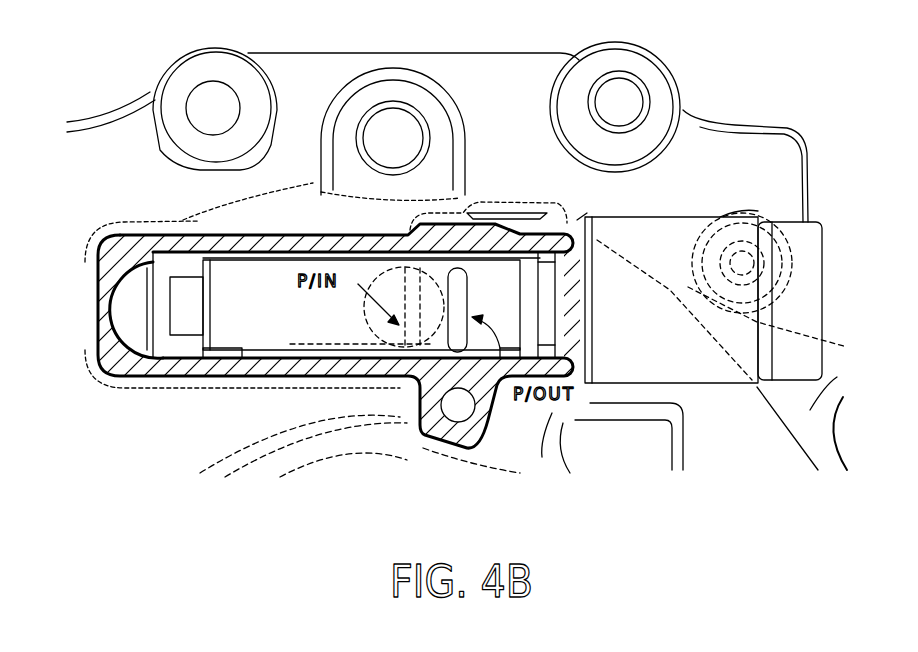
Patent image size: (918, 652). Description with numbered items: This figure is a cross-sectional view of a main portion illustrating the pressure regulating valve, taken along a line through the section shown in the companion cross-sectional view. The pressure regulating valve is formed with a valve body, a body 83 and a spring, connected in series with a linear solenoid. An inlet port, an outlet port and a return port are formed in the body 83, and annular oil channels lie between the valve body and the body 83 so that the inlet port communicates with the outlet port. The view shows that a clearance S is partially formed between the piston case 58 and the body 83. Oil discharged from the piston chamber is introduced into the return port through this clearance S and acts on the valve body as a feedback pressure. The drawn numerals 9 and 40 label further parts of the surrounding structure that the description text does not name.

The solenoid valve unit 9 is at (720, 153).
The piston case 58 is at (135, 240).
The body 83 is at (287, 262).
The valve 40 is at (375, 335).
The clearance S is at (316, 352).